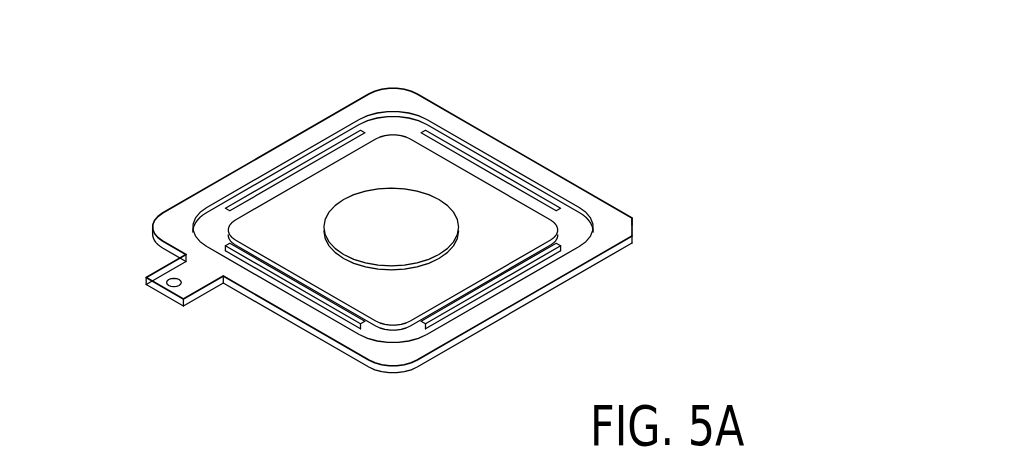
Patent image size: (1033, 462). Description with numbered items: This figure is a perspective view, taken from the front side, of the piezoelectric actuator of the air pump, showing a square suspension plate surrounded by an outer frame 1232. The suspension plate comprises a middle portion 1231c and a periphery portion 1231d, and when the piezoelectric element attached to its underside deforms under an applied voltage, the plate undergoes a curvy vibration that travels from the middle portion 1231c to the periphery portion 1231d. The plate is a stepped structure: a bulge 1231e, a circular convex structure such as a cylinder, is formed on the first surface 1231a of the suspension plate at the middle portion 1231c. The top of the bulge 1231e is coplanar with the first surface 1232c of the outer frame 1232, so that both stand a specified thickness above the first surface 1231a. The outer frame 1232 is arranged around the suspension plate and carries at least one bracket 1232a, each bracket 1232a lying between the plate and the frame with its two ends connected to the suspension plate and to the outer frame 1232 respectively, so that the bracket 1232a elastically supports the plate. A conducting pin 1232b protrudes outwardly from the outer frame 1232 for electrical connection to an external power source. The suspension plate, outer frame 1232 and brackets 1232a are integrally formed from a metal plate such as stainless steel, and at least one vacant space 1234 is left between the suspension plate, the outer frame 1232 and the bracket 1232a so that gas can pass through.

The first surface of the suspension plate 1231a is at (533, 233).
The middle portion 1231c is at (407, 216).
The periphery portion 1231d is at (490, 228).
The bulge 1231e is at (363, 217).
The outer frame 1232 is at (515, 165).
The bracket 1232a is at (495, 287).
The conducting pin 1232b is at (160, 277).
The first surface of the outer frame 1232c is at (430, 110).
The vacant space 1234 is at (375, 130).